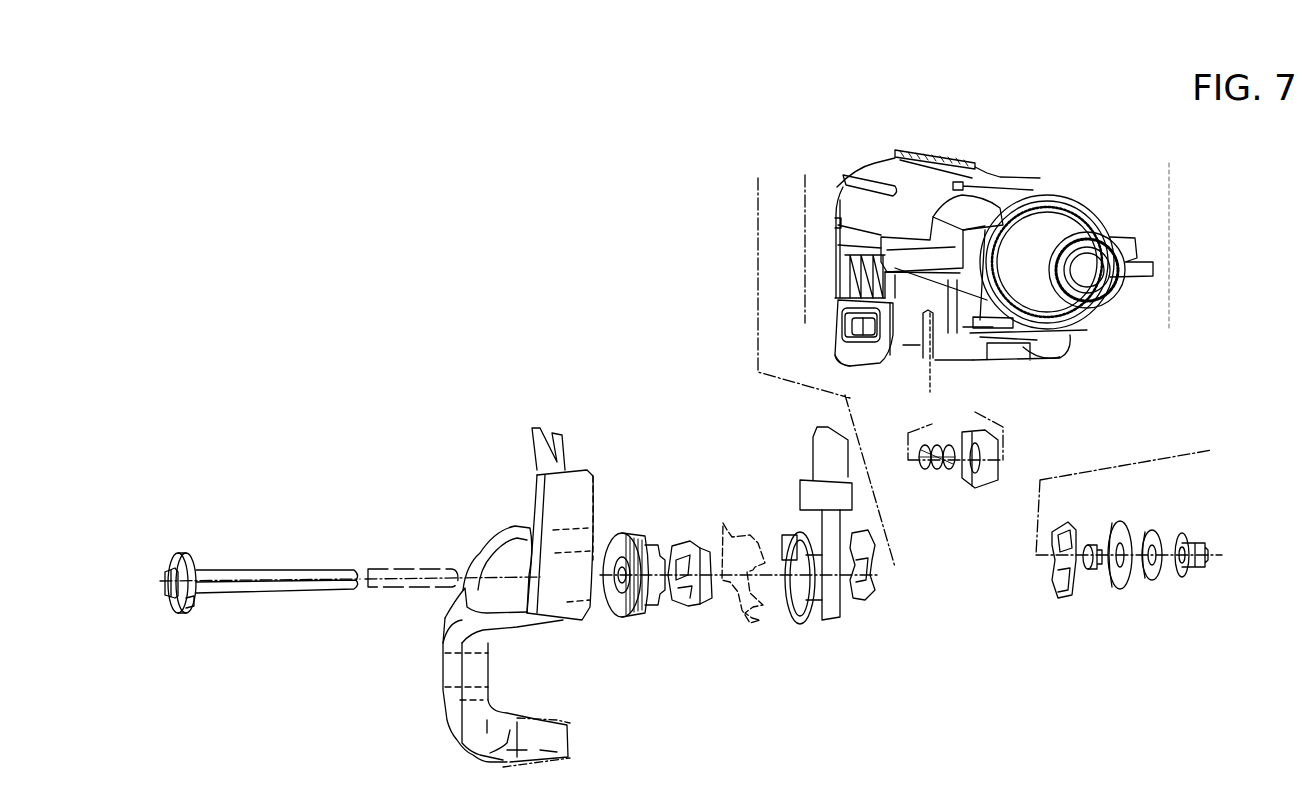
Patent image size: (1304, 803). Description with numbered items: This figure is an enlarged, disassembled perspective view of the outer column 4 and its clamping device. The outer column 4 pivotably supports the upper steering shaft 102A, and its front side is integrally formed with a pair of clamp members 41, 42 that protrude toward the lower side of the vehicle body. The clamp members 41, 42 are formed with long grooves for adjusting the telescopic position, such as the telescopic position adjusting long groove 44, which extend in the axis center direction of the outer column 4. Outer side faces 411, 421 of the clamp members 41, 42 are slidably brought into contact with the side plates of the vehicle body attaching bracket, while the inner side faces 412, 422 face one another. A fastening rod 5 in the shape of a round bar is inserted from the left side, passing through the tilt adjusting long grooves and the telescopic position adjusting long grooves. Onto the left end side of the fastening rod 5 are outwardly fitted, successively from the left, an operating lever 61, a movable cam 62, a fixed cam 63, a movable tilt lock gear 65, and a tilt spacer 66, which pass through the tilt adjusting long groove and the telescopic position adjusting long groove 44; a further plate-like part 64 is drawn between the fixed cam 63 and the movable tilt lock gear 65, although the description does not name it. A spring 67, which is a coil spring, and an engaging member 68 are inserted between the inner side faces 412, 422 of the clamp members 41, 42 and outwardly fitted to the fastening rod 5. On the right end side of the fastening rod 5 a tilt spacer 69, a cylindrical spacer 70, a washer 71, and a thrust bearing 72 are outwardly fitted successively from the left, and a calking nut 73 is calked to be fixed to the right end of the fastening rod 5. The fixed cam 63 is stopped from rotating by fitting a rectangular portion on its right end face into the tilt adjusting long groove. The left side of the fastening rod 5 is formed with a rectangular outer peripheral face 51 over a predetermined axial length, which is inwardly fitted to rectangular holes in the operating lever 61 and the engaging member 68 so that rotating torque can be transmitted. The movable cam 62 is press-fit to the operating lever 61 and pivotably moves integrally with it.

The outer column 4 is at (961, 267).
The upper steering shaft 102A is at (1042, 228).
The clamp member 41 is at (1001, 358).
The outer side face of clamp member 411 is at (1020, 350).
The inner side face of clamp member 412 is at (963, 350).
The clamp member 42 is at (893, 363).
The outer side face of clamp member 421 is at (848, 356).
The inner side face of clamp member 422 is at (921, 356).
The telescopic position adjusting long groove 44 is at (845, 328).
The fastening rod 5 is at (298, 553).
The rectangular outer peripheral face 51 is at (242, 581).
The operating lever 61 is at (549, 430).
The movable cam 62 is at (641, 540).
The fixed cam 63 is at (690, 545).
The spring plate 64 is at (742, 535).
The movable tilt lock gear 65 is at (815, 621).
The tilt spacer 66 is at (862, 600).
The spring 67 is at (935, 470).
The engaging member 68 is at (979, 482).
The tilt spacer 69 is at (1062, 598).
The cylindrical spacer 70 is at (1092, 548).
The washer 71 is at (1127, 588).
The thrust bearing 72 is at (1156, 530).
The calking nut 73 is at (1191, 575).